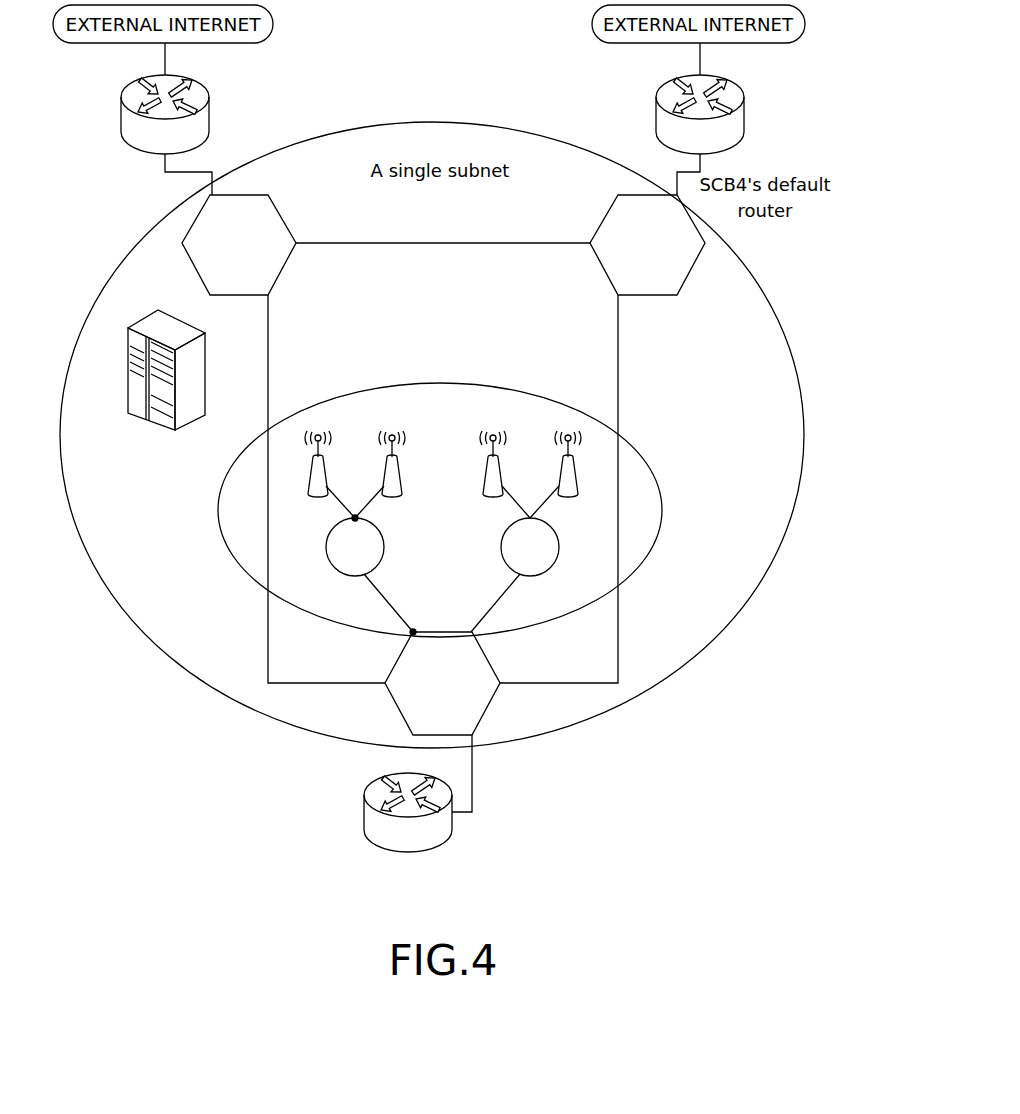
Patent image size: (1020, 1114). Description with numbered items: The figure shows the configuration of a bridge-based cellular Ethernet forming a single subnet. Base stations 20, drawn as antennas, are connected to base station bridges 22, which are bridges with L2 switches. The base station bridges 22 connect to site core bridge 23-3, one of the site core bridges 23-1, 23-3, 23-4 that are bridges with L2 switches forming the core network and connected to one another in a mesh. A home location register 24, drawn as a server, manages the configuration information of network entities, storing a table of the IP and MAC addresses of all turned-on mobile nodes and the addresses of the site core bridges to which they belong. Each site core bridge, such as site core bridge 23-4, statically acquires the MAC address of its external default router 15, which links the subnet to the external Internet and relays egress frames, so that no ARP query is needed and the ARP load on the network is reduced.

The external router 15 is at (745, 97).
The base station 20 is at (443, 448).
The base station bridge 22 is at (384, 547).
The site core bridge 1 23-1 is at (287, 270).
The site core bridge 3 23-3 is at (490, 706).
The site core bridge 4 23-4 is at (661, 296).
The home location register 24 is at (150, 420).